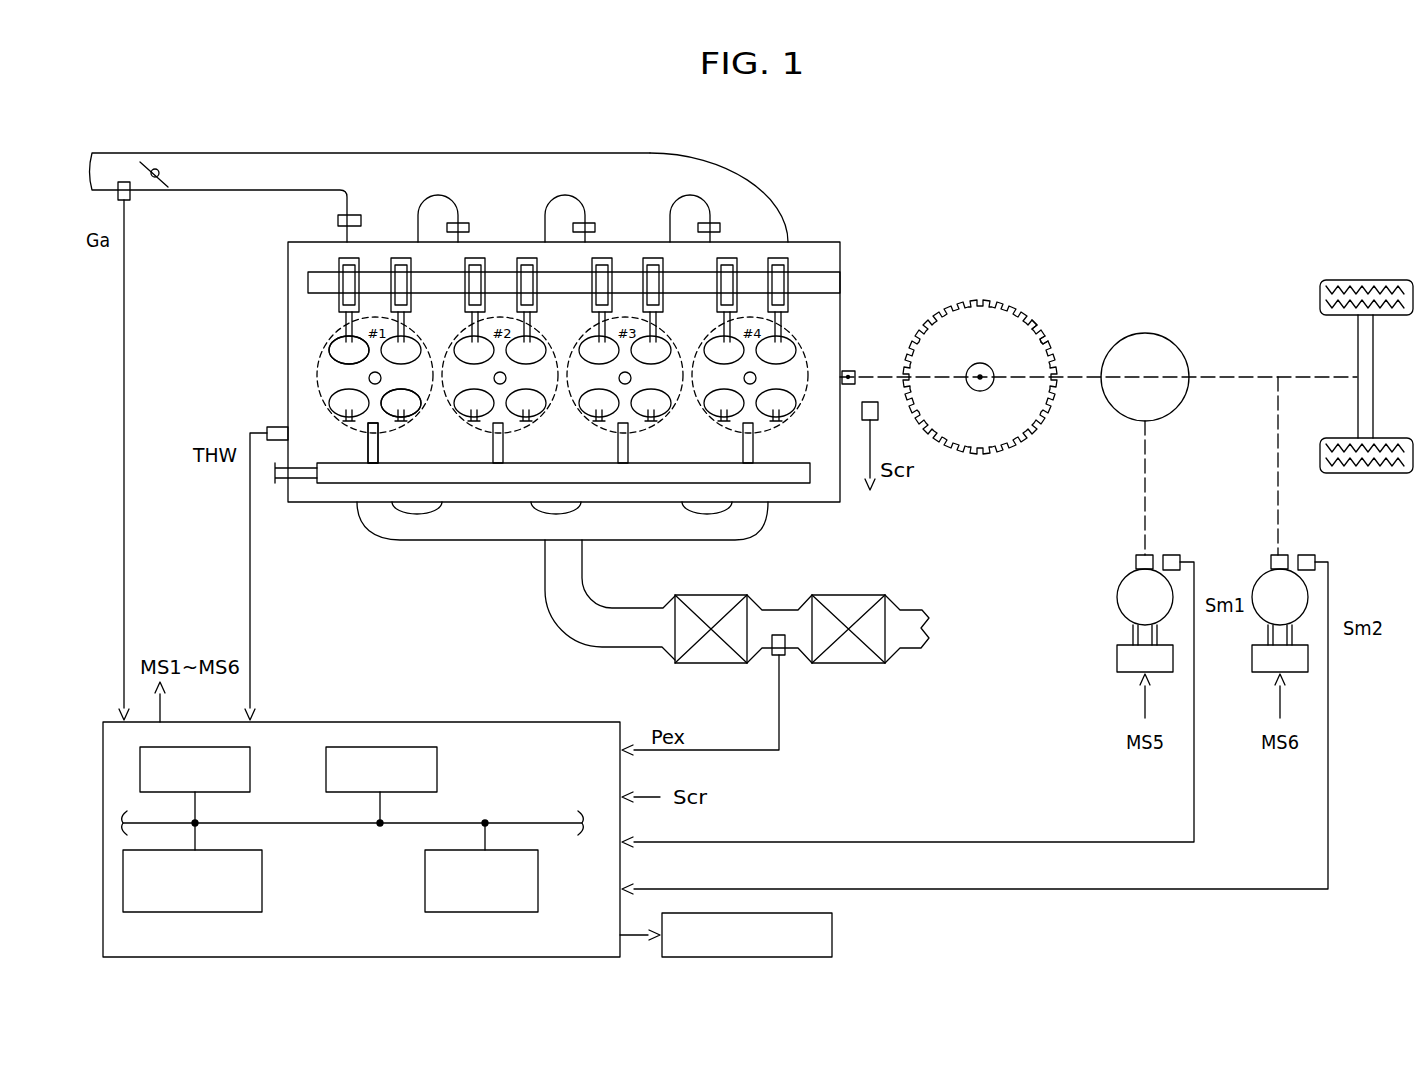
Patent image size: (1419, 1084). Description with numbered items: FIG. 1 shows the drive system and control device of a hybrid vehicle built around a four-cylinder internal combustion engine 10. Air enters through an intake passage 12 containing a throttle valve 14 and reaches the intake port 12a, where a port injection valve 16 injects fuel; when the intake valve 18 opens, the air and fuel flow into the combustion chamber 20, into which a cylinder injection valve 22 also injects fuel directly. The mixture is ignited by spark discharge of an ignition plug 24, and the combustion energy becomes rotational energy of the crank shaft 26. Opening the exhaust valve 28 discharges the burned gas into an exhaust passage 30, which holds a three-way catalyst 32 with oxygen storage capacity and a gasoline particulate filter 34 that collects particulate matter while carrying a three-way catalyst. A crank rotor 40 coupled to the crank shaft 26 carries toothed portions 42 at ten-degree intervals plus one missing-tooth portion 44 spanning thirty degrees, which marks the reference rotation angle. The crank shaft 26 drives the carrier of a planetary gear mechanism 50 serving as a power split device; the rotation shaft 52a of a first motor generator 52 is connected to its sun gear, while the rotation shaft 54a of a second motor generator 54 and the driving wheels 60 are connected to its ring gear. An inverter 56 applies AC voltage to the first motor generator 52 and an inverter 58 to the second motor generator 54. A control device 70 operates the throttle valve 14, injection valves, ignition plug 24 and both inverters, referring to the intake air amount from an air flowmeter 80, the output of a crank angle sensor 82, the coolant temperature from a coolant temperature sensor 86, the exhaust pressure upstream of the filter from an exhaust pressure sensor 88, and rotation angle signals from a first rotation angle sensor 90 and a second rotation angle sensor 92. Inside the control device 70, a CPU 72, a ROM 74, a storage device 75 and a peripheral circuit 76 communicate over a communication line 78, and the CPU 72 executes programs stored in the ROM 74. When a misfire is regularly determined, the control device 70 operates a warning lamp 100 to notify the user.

The internal combustion engine 10 is at (846, 216).
The intake passage 12 is at (118, 155).
The intake port 12a is at (770, 218).
The throttle valve 14 is at (170, 162).
The port injection valve 16 is at (700, 218).
The intake valve 18 is at (340, 326).
The combustion chamber 20 is at (330, 352).
The cylinder injection valve 22 is at (403, 420).
The ignition plug 24 is at (408, 340).
The crank shaft 26 is at (850, 365).
The exhaust valve 28 is at (398, 423).
The exhaust passage 30 is at (636, 546).
The three-way catalyst 32 is at (718, 592).
The gasoline particulate filter 34 is at (855, 593).
The crank rotor 40 is at (1026, 281).
The toothed portions 42 is at (1036, 327).
The missing-tooth portion 44 is at (1050, 350).
The planetary gear mechanism 50 is at (1186, 342).
The first motor generator 52 is at (1117, 596).
The rotation shaft of first motor generator 52a is at (1135, 563).
The second motor generator 54 is at (1258, 586).
The rotation shaft of second motor generator 54a is at (1272, 557).
The inverter 56 is at (1118, 662).
The inverter 58 is at (1253, 662).
The driving wheels 60 is at (1406, 475).
The control device 70 is at (506, 721).
The CPU 72 is at (252, 769).
The ROM 74 is at (438, 769).
The storage device 75 is at (539, 879).
The peripheral circuit 76 is at (263, 879).
The communication line 78 is at (521, 821).
The air flowmeter 80 is at (131, 196).
The crank angle sensor 82 is at (879, 419).
The coolant temperature sensor 86 is at (265, 427).
The exhaust pressure sensor 88 is at (785, 656).
The first rotation angle sensor 90 is at (1171, 554).
The second rotation angle sensor 92 is at (1306, 554).
The warning lamp 100 is at (835, 936).